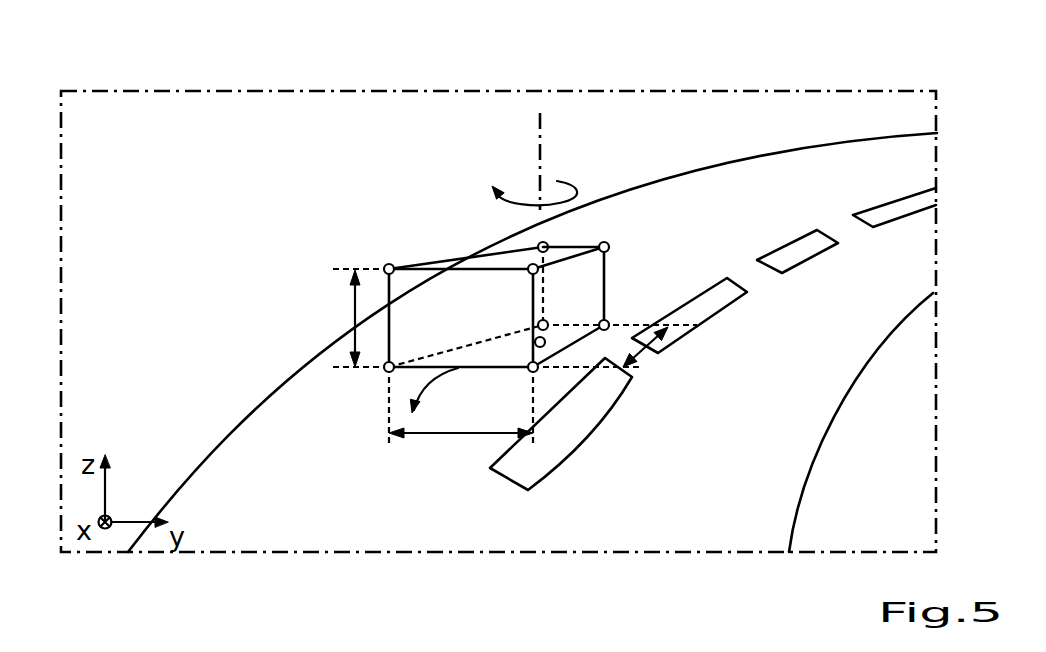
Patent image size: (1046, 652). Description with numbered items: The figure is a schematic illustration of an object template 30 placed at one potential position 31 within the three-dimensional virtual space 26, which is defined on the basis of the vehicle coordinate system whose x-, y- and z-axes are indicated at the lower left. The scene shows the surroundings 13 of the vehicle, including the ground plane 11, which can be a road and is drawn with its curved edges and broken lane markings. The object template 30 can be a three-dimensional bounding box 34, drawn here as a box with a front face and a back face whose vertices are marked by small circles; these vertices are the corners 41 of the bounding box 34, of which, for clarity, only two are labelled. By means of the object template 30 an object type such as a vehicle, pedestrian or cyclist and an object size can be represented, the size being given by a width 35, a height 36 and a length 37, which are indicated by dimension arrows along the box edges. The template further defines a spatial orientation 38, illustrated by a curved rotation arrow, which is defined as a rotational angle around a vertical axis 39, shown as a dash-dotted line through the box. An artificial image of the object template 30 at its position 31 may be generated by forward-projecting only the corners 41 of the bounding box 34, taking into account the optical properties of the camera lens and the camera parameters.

The ground plane 11 is at (758, 422).
The surroundings 13 is at (158, 221).
The virtual space 26 is at (352, 91).
The object template 30 is at (435, 261).
The potential position 31 is at (545, 341).
The 3D bounding box 34 is at (583, 247).
The width 35 is at (447, 437).
The height 36 is at (353, 312).
The length 37 is at (640, 350).
The spatial orientation 38 is at (557, 181).
The vertical axis 39 is at (542, 142).
The corners 41 is at (389, 265).